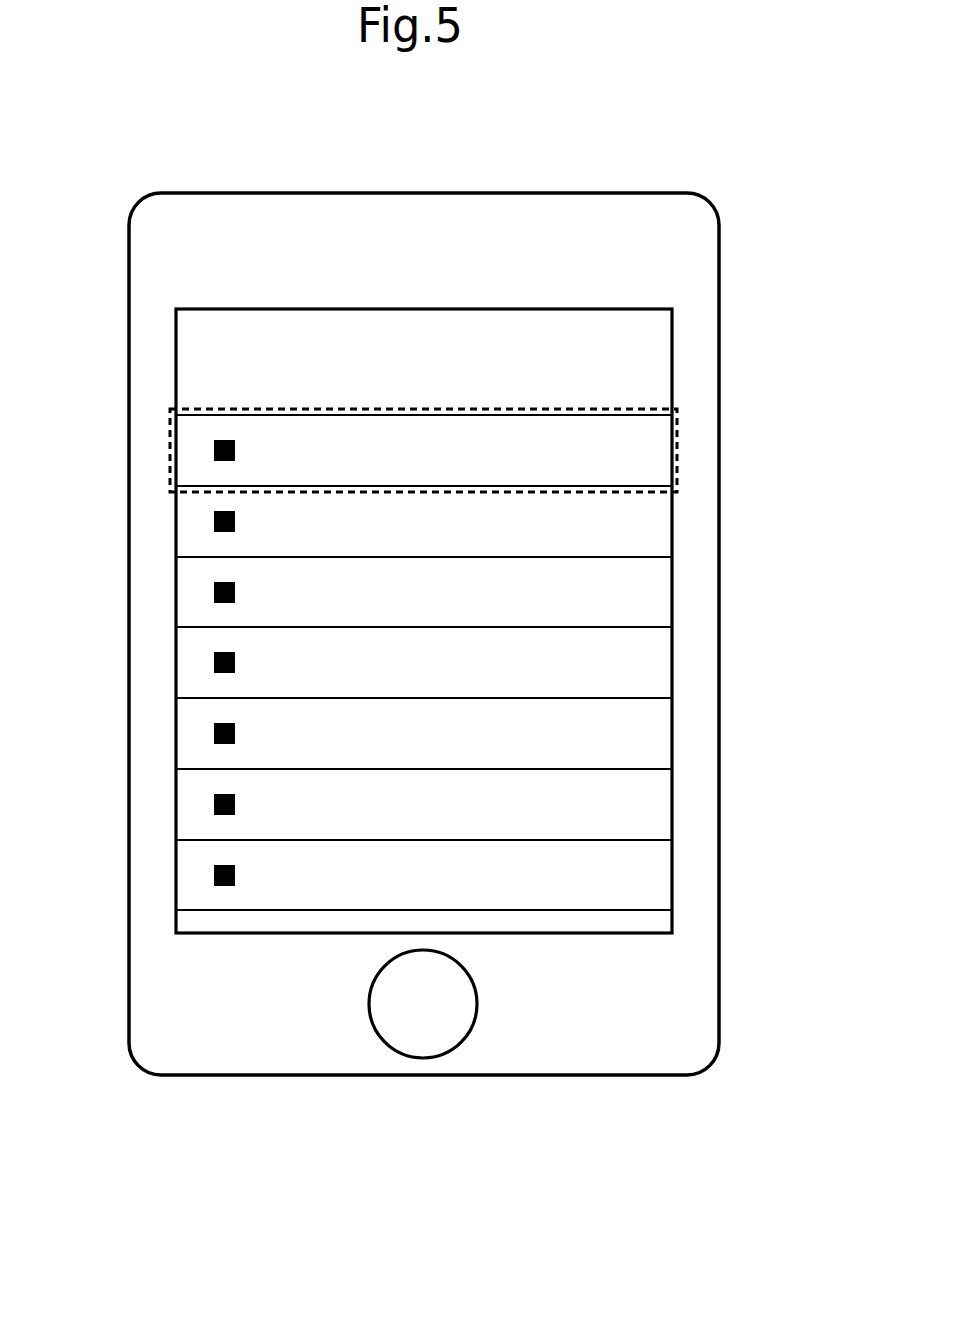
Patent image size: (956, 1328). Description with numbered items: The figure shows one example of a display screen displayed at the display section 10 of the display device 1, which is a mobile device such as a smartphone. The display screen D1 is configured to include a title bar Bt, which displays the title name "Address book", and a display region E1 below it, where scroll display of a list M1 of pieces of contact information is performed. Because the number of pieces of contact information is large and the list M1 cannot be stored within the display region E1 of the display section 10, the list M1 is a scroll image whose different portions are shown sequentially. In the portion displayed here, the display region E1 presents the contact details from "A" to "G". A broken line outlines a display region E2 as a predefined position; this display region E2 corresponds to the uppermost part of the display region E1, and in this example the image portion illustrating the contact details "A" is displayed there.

The display device 1 is at (260, 1142).
The display section 10 is at (288, 308).
The title bar Bt is at (652, 362).
The display screen D1 is at (692, 530).
The display region E1 is at (673, 658).
The display region (predefined position) E2 is at (170, 448).
The list M1 is at (555, 888).